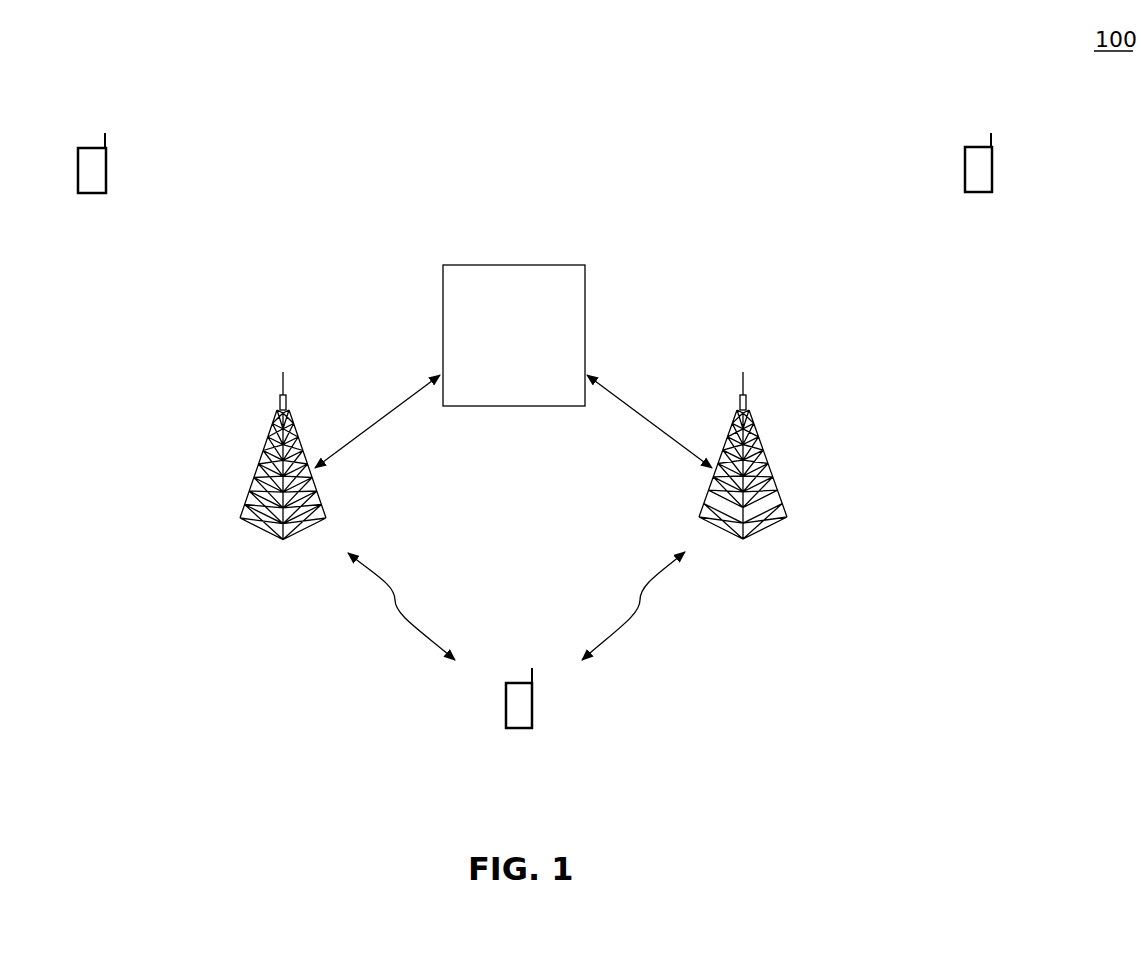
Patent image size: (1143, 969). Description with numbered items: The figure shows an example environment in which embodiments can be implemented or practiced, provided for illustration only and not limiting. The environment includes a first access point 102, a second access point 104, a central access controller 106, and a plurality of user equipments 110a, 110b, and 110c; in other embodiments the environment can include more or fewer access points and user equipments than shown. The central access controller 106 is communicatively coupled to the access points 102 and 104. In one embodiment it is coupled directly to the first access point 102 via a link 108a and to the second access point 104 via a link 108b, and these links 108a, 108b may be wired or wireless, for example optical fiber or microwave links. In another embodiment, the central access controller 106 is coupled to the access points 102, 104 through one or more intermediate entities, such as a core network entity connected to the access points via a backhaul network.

The first Access Point 102 is at (258, 470).
The second Access Point 104 is at (770, 468).
The central access controller 106 is at (514, 335).
The link 108a is at (380, 425).
The link 108b is at (646, 425).
The user equipment 110a is at (532, 705).
The user equipment 110b is at (106, 170).
The user equipment 110c is at (992, 168).